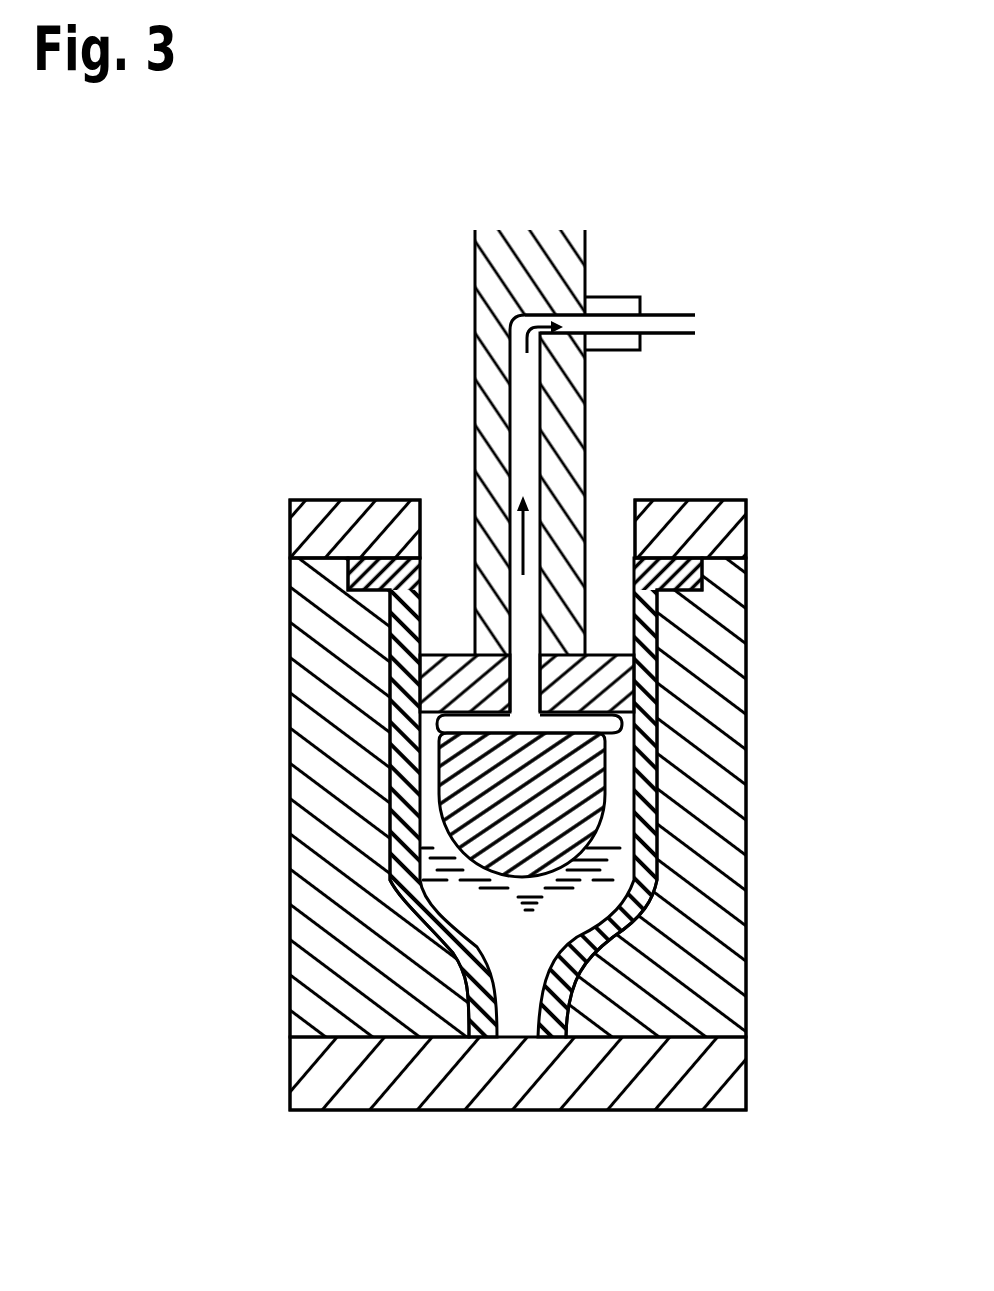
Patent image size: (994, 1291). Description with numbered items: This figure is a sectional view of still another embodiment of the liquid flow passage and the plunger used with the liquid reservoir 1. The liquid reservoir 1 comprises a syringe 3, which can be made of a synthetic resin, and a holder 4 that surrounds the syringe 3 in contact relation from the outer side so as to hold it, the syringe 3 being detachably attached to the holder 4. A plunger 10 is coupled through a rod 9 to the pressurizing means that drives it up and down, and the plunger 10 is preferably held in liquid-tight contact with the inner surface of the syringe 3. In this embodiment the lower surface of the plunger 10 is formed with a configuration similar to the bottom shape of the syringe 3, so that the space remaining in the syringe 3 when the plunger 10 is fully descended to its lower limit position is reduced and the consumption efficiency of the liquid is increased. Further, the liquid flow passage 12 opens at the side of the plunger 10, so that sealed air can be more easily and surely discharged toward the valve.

The liquid reservoir 1 is at (796, 598).
The syringe 3 is at (650, 808).
The holder 4 is at (746, 723).
The rod 9 is at (490, 280).
The plunger 10 is at (467, 803).
The liquid flow passage 12 is at (673, 313).